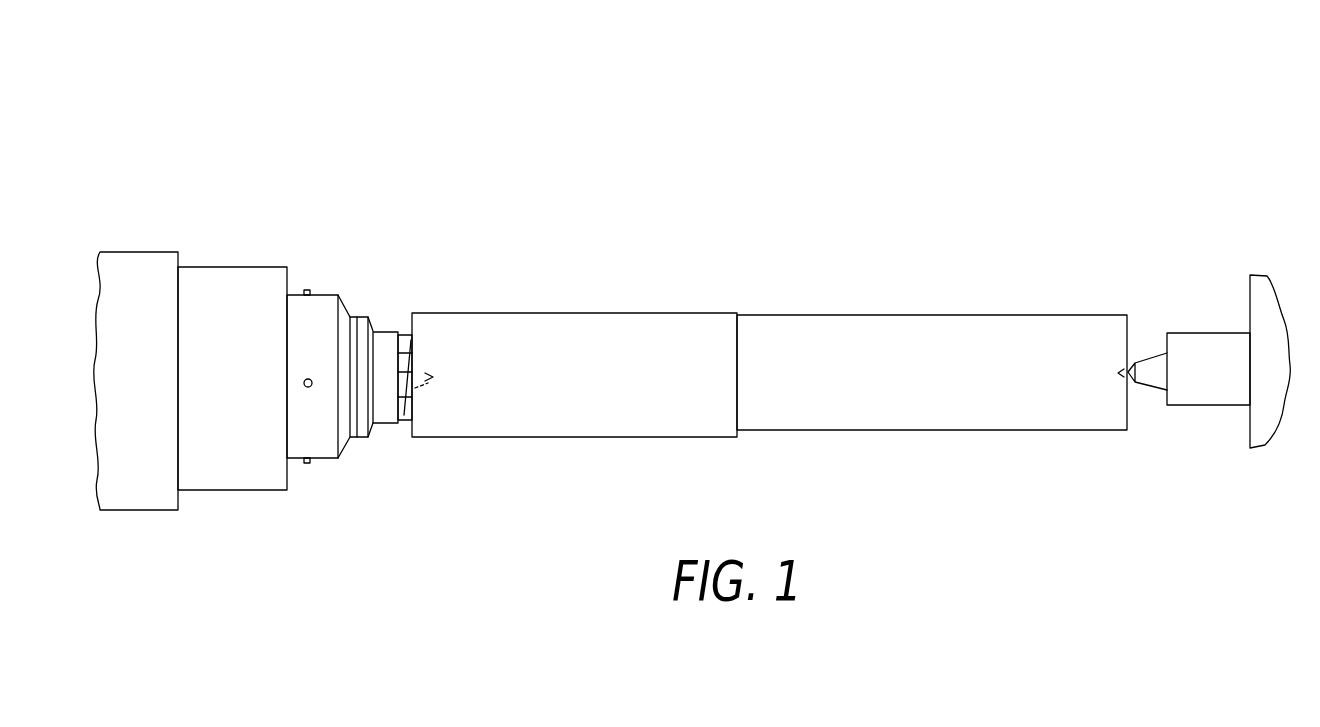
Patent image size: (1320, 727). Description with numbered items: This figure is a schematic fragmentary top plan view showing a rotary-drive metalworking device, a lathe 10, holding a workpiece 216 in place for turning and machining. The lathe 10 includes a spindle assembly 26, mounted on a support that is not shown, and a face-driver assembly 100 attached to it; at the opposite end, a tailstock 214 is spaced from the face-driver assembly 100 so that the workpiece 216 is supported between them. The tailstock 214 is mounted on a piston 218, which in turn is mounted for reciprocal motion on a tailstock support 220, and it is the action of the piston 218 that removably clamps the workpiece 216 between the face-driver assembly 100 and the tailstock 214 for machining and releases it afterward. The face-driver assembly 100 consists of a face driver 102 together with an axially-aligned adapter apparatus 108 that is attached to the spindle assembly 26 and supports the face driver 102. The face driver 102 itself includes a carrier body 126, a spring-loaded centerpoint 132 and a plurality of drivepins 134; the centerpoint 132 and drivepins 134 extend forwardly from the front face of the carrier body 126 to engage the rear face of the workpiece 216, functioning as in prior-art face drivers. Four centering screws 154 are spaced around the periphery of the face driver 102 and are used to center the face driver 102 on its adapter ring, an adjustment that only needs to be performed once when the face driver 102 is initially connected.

The lathe 10 is at (978, 97).
The spindle assembly 26 is at (143, 252).
The face-driver assembly 100 is at (412, 108).
The face driver 102 is at (378, 270).
The adapter apparatus 108 is at (213, 267).
The carrier body 126 is at (363, 437).
The spring-loaded centerpoint 132 is at (417, 368).
The drivepins 134 is at (408, 347).
The centering screws 154 is at (307, 290).
The tailstock 214 is at (1143, 390).
The workpiece 216 is at (817, 315).
The piston 218 is at (1200, 335).
The tailstock support 220 is at (1250, 287).